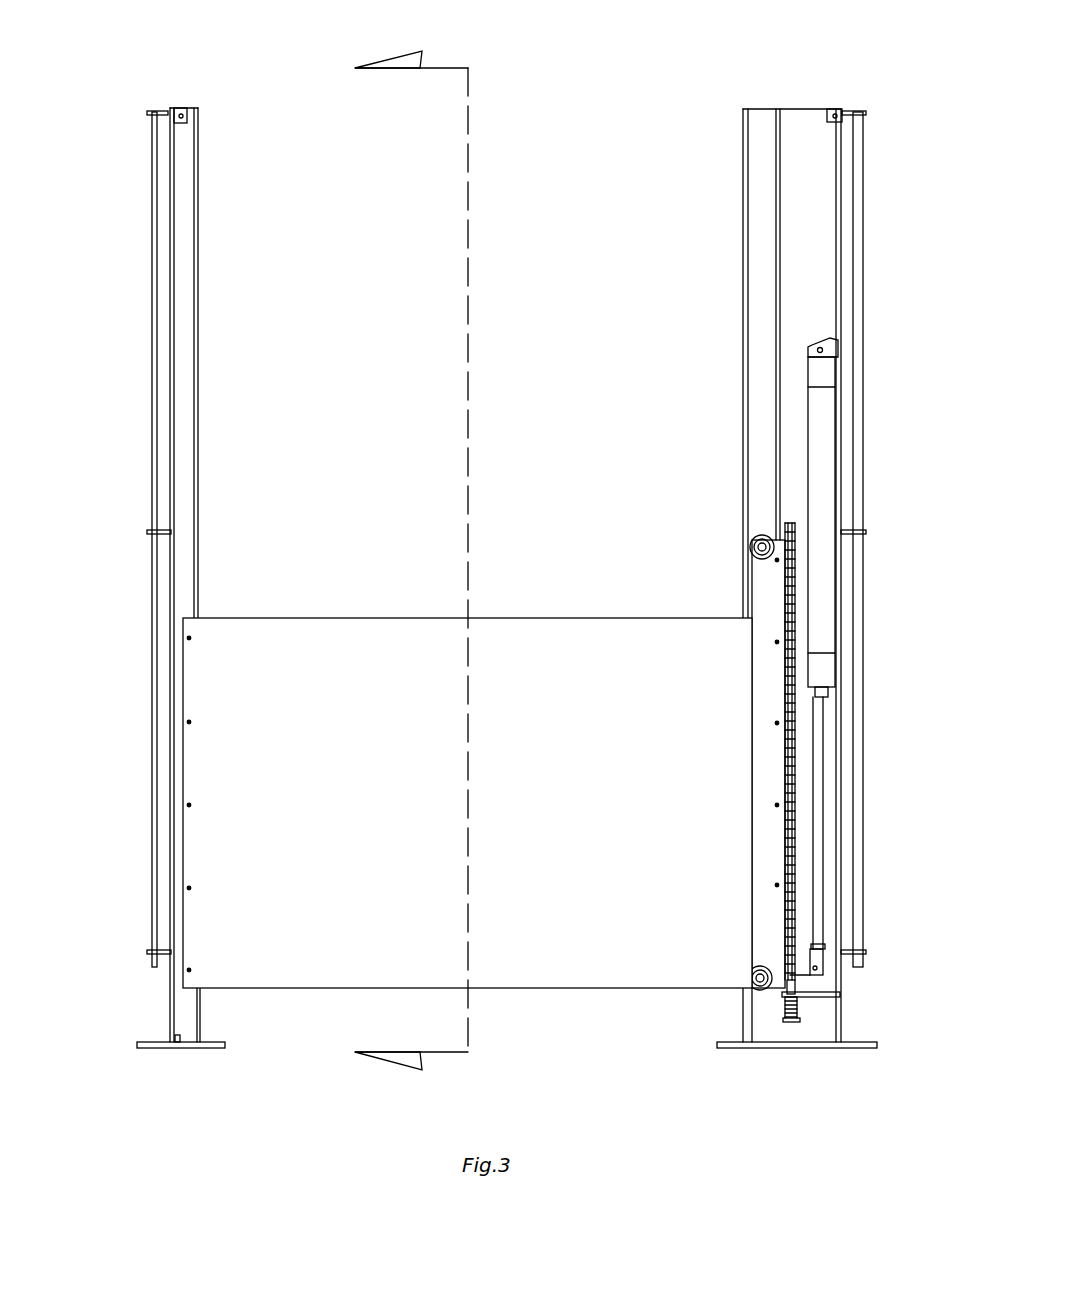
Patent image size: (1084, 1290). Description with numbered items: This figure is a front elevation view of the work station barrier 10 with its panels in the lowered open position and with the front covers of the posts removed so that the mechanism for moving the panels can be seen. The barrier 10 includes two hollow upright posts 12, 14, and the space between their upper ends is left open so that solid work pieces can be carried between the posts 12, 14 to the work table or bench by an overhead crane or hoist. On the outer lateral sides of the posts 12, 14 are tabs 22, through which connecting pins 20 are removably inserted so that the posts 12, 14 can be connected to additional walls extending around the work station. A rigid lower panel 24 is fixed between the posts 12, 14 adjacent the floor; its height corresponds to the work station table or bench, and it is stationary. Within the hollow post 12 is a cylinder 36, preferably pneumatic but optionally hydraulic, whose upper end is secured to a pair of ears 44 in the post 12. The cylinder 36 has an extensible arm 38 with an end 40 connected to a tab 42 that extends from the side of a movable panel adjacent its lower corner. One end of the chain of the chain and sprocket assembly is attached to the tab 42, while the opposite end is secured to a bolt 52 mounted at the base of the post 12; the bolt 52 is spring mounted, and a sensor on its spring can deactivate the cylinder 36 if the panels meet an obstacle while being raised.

The work station barrier 10 is at (165, 38).
The upright post 12 is at (795, 207).
The upright post 14 is at (183, 170).
The connecting pin 20 is at (152, 330).
The tab 22 is at (168, 110).
The lower panel 24 is at (545, 801).
The cylinder 36 is at (835, 605).
The extensible arm 38 is at (823, 808).
The end of extensible arm 40 is at (823, 962).
The tab 42 is at (797, 980).
The ears 44 is at (838, 346).
The bolt 52 is at (795, 1010).